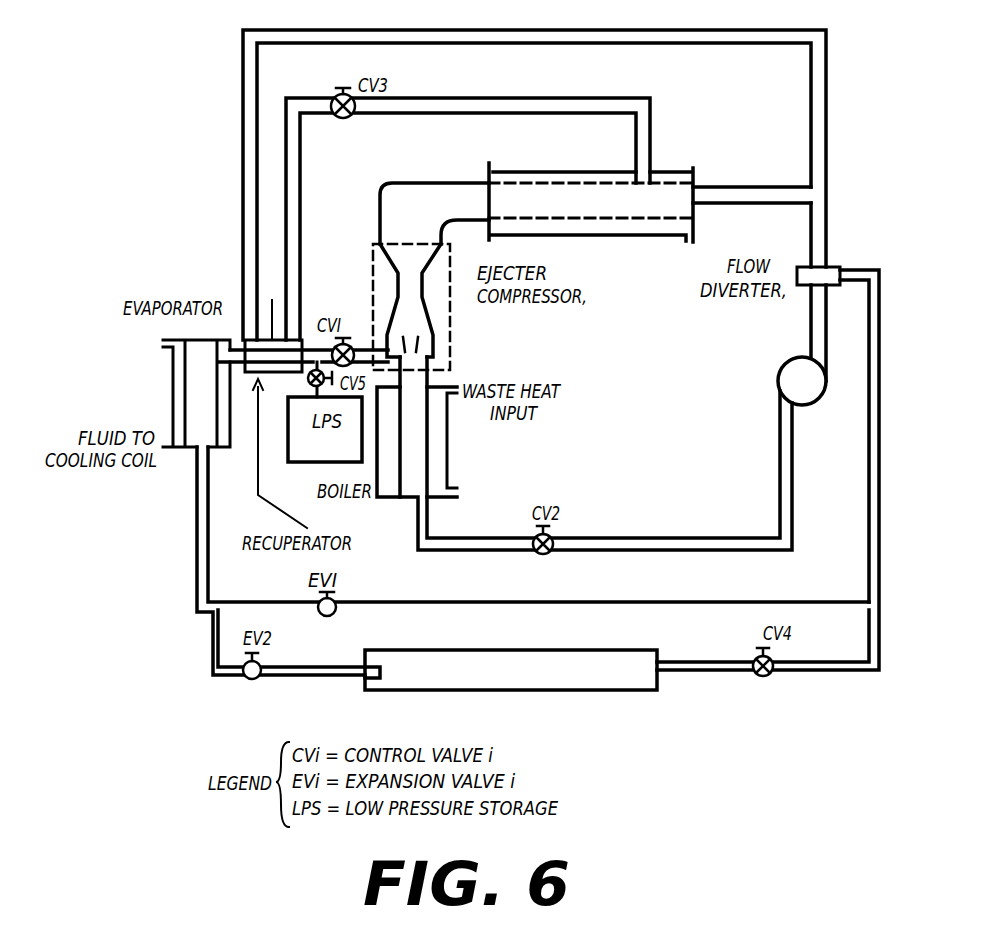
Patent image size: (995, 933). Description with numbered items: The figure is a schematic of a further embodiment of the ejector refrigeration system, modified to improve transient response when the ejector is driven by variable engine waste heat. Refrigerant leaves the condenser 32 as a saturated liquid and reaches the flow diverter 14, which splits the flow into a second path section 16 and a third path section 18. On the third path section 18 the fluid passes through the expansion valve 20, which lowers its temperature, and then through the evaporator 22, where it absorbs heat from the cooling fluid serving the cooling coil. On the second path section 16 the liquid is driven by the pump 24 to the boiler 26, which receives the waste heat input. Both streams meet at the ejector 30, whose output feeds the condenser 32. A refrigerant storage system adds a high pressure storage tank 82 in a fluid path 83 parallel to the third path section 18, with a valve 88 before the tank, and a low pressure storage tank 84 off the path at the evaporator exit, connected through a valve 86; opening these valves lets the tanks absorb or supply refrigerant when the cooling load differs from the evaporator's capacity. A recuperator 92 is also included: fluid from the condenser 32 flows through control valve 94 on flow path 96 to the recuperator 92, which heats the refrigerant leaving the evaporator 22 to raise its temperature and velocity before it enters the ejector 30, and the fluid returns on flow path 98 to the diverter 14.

The flow path 98 is at (533, 30).
The flow path 96 is at (530, 98).
The control valve 94 is at (340, 95).
The recuperator 92 is at (272, 300).
The evaporator 22 is at (193, 387).
The condenser 32 is at (572, 176).
The valve 86 is at (308, 378).
The low pressure storage tank 84 is at (316, 447).
The ejector 30 is at (413, 330).
The boiler 26 is at (442, 455).
The second path section 16 is at (633, 537).
The third path section 18 is at (670, 600).
The expansion valve 20 is at (335, 598).
The flow diverter 14 is at (808, 285).
The pump 24 is at (793, 368).
The high pressure storage tank 82 is at (645, 688).
The fluid path 83 is at (827, 675).
The valve 88 is at (764, 678).